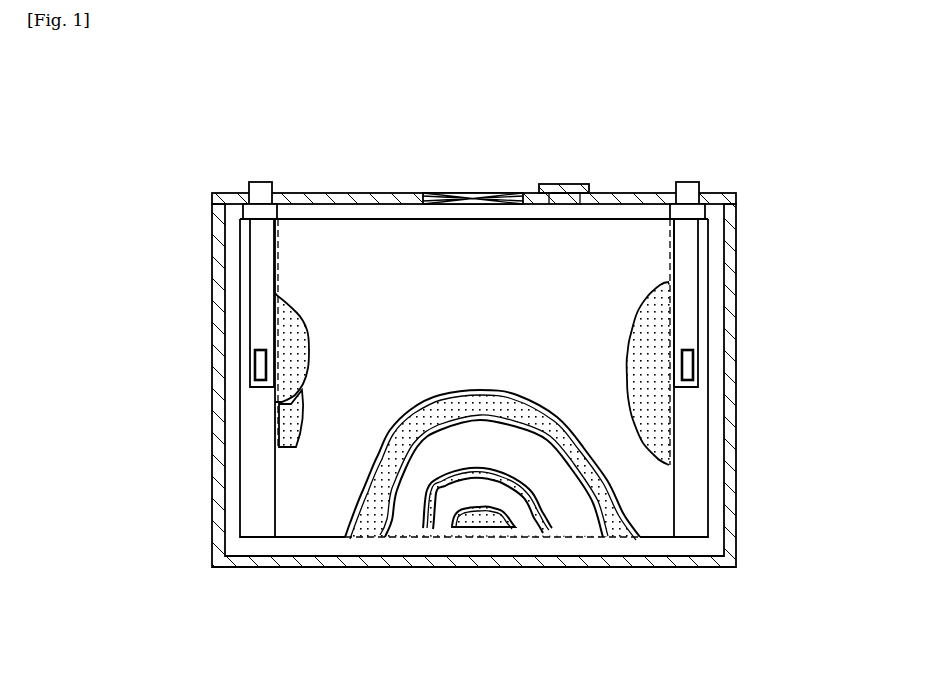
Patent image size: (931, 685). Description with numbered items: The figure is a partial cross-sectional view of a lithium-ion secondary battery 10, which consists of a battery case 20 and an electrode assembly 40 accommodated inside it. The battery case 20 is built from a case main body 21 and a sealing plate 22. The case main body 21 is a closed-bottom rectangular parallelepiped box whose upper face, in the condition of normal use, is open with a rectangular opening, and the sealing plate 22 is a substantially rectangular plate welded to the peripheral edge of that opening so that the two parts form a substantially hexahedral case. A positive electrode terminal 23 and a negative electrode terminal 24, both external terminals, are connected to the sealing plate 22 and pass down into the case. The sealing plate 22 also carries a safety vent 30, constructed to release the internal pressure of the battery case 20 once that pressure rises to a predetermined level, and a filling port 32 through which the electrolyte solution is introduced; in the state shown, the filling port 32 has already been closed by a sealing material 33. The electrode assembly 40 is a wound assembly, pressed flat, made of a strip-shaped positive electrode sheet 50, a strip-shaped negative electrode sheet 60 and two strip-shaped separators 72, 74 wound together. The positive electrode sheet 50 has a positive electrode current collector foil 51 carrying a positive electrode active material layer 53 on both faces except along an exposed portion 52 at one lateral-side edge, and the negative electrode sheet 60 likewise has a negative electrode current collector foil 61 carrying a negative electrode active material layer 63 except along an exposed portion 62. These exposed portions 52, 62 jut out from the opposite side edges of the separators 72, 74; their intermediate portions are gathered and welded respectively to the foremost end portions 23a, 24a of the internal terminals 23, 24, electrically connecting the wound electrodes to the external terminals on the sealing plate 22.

The lithium-ion secondary battery 10 is at (480, 369).
The battery case 20 is at (517, 371).
The case main body 21 is at (737, 537).
The sealing plate 22 is at (640, 193).
The positive electrode terminal 23 is at (258, 182).
The foremost end portion of the positive electrode terminal 23a is at (245, 362).
The negative electrode terminal 24 is at (684, 182).
The foremost end portion of the negative electrode terminal 24a is at (702, 363).
The safety vent 30 is at (473, 193).
The filling port 32 is at (578, 153).
The sealing material 33 is at (558, 184).
The electrode assembly 40 is at (473, 382).
The positive electrode sheet 50 is at (445, 522).
The positive electrode current collector foil 51 is at (240, 495).
The exposed portion 52 is at (255, 513).
The positive electrode active material layer 53 is at (297, 347).
The negative electrode sheet 60 is at (278, 437).
The negative electrode current collector foil 61 is at (708, 432).
The exposed portion 62 is at (697, 403).
The negative electrode active material layer 63 is at (640, 318).
The separator 72 is at (310, 473).
The separator 74 is at (275, 403).